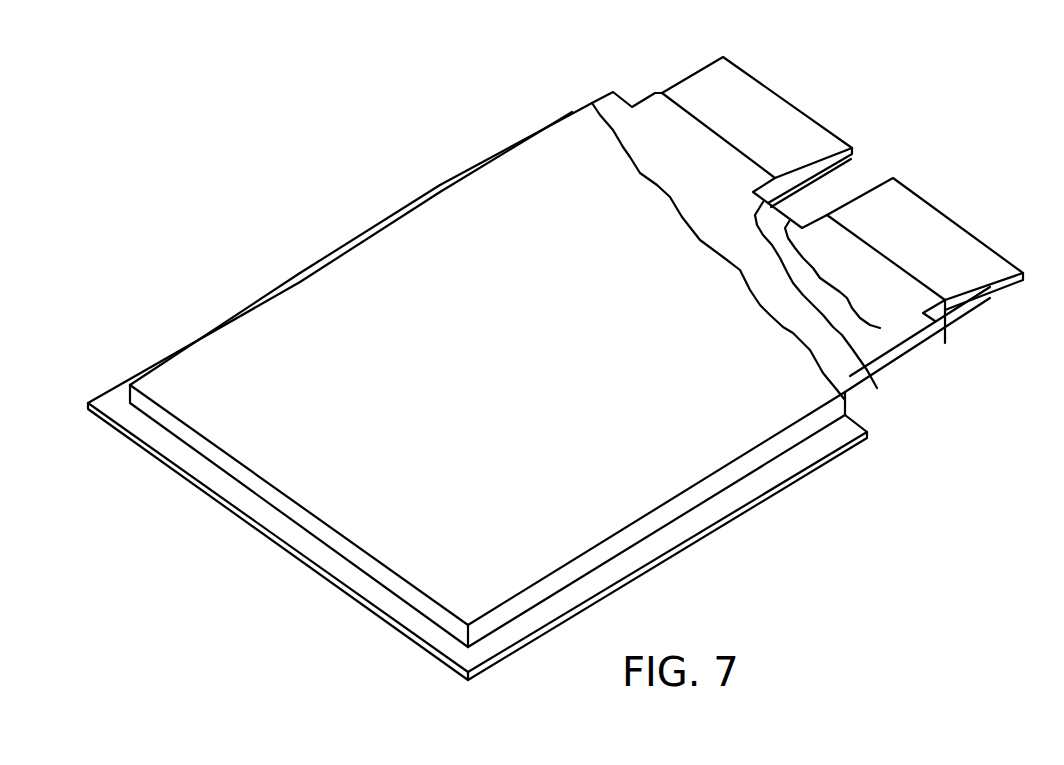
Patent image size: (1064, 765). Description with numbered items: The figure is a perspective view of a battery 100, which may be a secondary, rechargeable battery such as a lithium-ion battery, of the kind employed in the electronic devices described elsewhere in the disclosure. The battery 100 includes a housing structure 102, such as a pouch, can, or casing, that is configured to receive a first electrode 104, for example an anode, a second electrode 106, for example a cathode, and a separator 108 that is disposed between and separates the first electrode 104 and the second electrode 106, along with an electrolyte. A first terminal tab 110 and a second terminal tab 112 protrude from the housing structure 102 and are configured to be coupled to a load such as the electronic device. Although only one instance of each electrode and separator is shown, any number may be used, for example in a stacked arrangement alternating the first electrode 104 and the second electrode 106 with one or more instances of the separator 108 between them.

The battery 100 is at (314, 174).
The housing structure 102 is at (808, 455).
The first electrode 104 is at (945, 342).
The second electrode 106 is at (872, 314).
The separator 108 is at (888, 307).
The first terminal tab 110 is at (787, 102).
The second terminal tab 112 is at (960, 222).